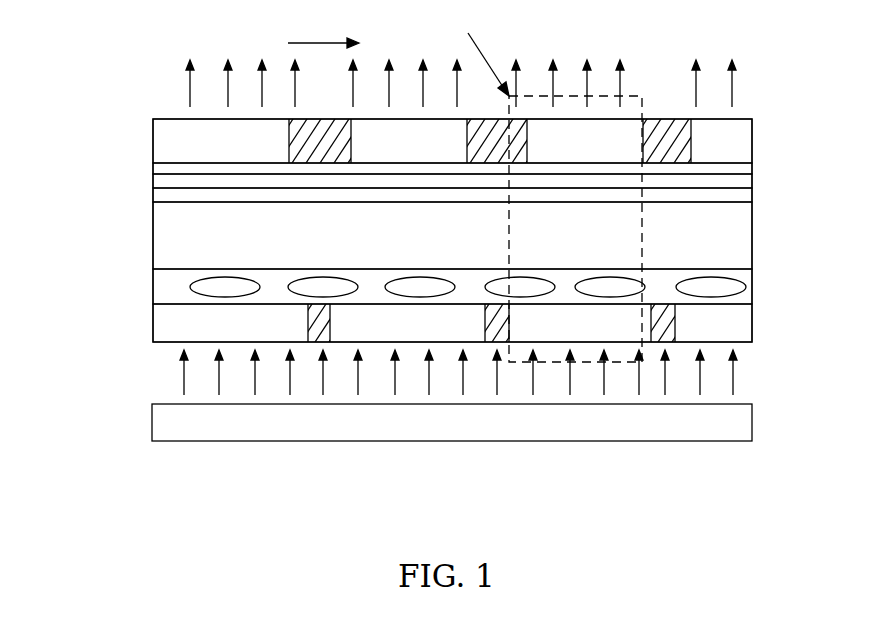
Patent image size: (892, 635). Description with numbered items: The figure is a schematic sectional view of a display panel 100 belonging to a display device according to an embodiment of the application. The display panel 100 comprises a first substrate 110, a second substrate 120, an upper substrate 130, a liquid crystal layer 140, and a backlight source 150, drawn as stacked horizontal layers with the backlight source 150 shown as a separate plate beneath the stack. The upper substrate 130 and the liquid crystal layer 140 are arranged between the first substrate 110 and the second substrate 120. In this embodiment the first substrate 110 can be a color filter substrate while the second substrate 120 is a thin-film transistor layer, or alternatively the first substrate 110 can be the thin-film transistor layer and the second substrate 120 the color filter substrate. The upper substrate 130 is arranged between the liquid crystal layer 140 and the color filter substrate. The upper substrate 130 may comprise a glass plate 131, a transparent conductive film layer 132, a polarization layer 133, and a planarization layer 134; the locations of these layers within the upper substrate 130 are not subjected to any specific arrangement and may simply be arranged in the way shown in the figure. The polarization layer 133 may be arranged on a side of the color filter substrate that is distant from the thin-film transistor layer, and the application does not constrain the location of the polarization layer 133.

The display panel 100 is at (121, 79).
The first substrate 110 is at (153, 140).
The second substrate 120 is at (153, 328).
The upper substrate 130 is at (443, 202).
The glass plate 131 is at (745, 238).
The transparent conductive film layer 132 is at (747, 195).
The polarization layer 133 is at (747, 176).
The planarization layer 134 is at (742, 168).
The liquid crystal layer 140 is at (153, 287).
The backlight source 150 is at (162, 425).